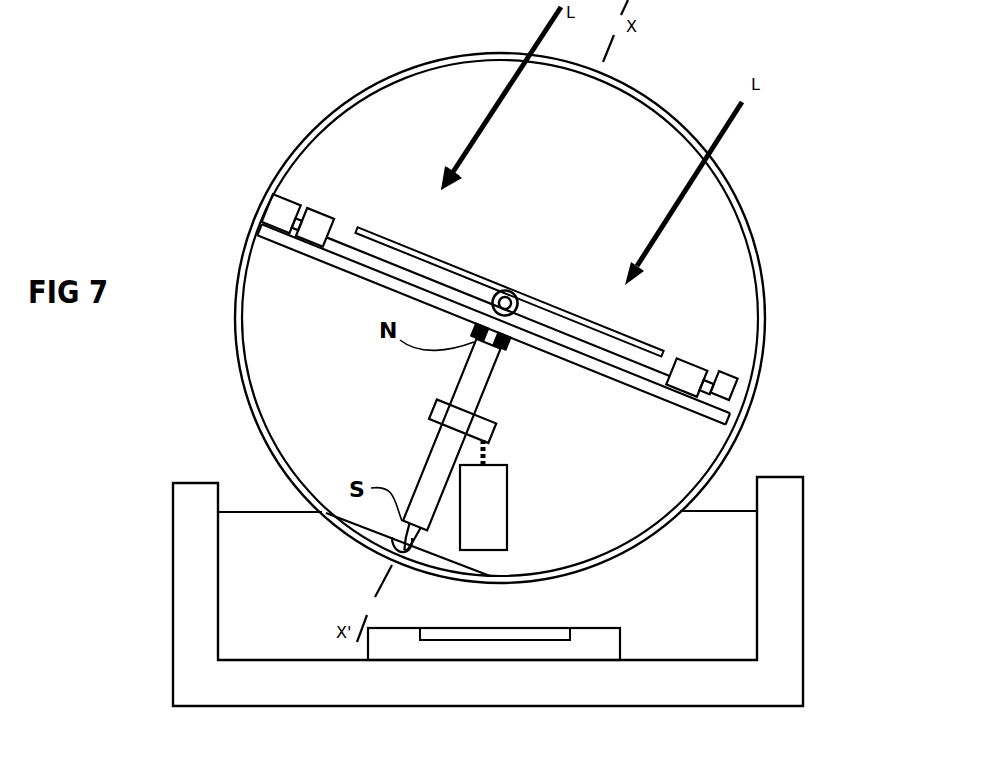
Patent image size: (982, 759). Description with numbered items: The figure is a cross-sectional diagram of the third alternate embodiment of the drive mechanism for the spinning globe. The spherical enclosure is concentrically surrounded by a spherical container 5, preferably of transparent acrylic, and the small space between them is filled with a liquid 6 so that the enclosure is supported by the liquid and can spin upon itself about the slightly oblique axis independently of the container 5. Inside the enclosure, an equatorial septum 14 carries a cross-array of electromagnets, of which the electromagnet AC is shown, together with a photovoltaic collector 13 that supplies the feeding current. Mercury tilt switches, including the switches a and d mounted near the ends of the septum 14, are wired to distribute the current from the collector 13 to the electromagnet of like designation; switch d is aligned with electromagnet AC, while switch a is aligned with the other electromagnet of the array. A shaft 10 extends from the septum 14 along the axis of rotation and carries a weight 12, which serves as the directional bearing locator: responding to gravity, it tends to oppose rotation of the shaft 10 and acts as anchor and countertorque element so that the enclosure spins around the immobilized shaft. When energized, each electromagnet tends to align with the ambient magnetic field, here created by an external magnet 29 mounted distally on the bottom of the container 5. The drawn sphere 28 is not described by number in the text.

The container 5 is at (803, 567).
The liquid 6 is at (720, 516).
The shaft 10 is at (487, 386).
The weight 12 is at (506, 491).
The photovoltaic collector 13 is at (436, 254).
The equatorial septum 14 is at (603, 377).
The spherical shell 28 is at (776, 227).
The external magnet 29 is at (580, 609).
The mercury tilt switch a is at (731, 373).
The mercury tilt switch d is at (286, 196).
The electromagnet AC is at (344, 223).